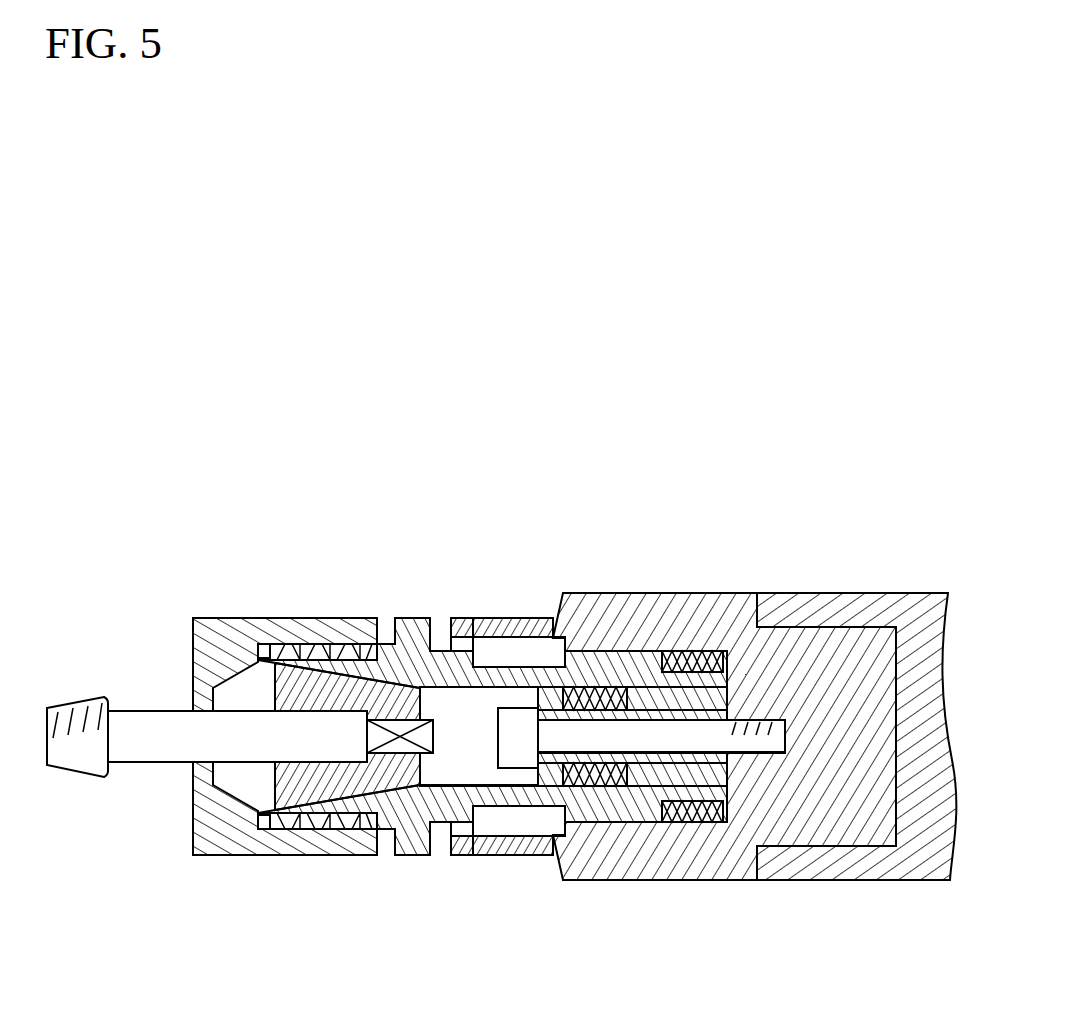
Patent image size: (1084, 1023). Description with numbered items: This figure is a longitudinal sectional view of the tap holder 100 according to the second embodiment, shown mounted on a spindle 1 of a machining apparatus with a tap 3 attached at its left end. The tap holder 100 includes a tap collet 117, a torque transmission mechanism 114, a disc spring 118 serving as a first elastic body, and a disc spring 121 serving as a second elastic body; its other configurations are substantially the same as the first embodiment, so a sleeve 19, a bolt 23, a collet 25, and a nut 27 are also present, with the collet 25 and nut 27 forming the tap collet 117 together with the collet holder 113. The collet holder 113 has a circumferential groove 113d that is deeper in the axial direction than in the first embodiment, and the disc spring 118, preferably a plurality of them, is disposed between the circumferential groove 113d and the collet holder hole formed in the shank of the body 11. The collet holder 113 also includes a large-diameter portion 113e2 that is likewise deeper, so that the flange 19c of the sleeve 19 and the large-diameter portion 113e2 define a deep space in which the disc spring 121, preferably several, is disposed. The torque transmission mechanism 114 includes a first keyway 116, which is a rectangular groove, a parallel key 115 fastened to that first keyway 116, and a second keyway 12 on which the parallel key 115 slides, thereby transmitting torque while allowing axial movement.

The spindle 1 is at (861, 593).
The tap 3 is at (93, 697).
The housing 11 is at (649, 593).
The second keyway 12 is at (465, 647).
The sleeve 19 is at (553, 775).
The flange 19c is at (560, 837).
The bolt 23 is at (520, 770).
The collet 25 is at (312, 618).
The nut 27 is at (228, 618).
The tap holder 100 is at (628, 512).
The collet holder 113 is at (417, 618).
The circumferential groove 113d is at (690, 655).
The large-diameter portion 113e2 is at (457, 770).
The torque transmission mechanism 114 is at (602, 506).
The parallel key 115 is at (514, 618).
The first keyway 116 is at (553, 665).
The tap collet 117 is at (415, 503).
The disc spring 118 is at (707, 818).
The disc spring 121 is at (613, 785).